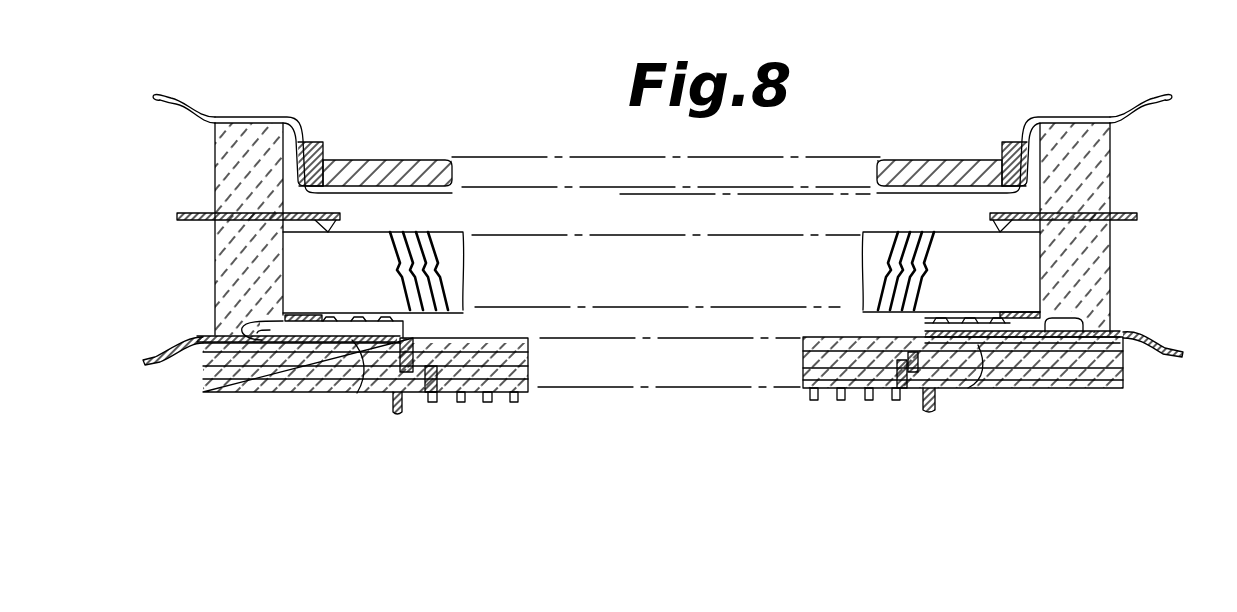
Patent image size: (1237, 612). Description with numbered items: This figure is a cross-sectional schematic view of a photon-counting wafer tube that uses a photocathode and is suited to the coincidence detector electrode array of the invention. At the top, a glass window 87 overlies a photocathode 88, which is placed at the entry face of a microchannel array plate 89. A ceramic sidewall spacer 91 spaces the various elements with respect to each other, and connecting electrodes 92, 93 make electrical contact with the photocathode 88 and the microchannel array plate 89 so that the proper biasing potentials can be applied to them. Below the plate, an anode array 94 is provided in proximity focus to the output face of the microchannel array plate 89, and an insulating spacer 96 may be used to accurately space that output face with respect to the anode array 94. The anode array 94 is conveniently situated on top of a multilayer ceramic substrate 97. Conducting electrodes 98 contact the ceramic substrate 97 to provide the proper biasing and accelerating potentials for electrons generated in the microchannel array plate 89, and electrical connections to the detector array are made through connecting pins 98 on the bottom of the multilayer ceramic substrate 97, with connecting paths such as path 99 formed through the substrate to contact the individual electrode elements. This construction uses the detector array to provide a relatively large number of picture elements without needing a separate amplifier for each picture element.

The glass window 87 is at (392, 160).
The photocathode 88 is at (420, 194).
The microchannel array plate 89 is at (352, 279).
The ceramic sidewall spacer 91 is at (227, 161).
The connecting electrode 92 is at (156, 97).
The connecting electrode 93 is at (178, 215).
The anode array 94 is at (927, 324).
The insulating spacer 96 is at (1030, 312).
The multilayer ceramic substrate 97 is at (204, 376).
The conducting electrodes / connecting pins 98 is at (157, 355).
The connecting path 99 is at (357, 393).